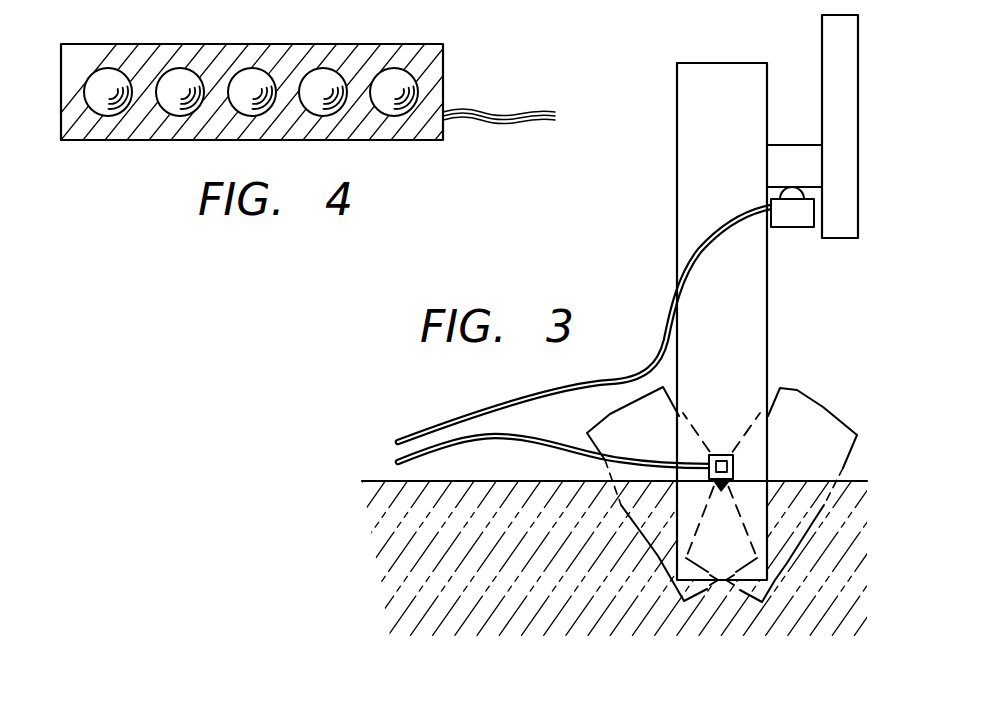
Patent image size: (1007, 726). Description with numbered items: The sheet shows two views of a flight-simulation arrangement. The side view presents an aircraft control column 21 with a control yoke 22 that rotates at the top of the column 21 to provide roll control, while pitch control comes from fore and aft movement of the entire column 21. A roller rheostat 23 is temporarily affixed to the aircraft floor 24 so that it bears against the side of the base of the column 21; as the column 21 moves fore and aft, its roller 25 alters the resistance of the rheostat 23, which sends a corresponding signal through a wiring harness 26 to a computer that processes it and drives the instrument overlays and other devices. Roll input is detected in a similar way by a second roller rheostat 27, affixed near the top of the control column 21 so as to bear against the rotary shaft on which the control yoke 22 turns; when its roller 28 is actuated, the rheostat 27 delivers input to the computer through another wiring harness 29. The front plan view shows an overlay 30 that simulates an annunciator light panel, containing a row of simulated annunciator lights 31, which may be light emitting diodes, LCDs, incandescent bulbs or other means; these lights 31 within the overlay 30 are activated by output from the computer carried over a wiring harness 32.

In FIG. 3, the control column 21 is at (677, 226).
In FIG. 3, the control yoke 22 is at (822, 38).
In FIG. 3, the roller rheostat 23 is at (736, 468).
In FIG. 3, the aircraft floor 24 is at (362, 481).
In FIG. 3, the roller 25 is at (722, 457).
In FIG. 3, the wiring harness 26 is at (398, 458).
In FIG. 3, the roller rheostat 27 is at (793, 228).
In FIG. 3, the roller 28 is at (789, 192).
In FIG. 3, the wiring harness 29 is at (420, 430).
In FIG. 4, the overlay 30 is at (169, 57).
In FIG. 4, the annunciator lights 31 is at (388, 84).
In FIG. 4, the wiring harness 32 is at (516, 117).